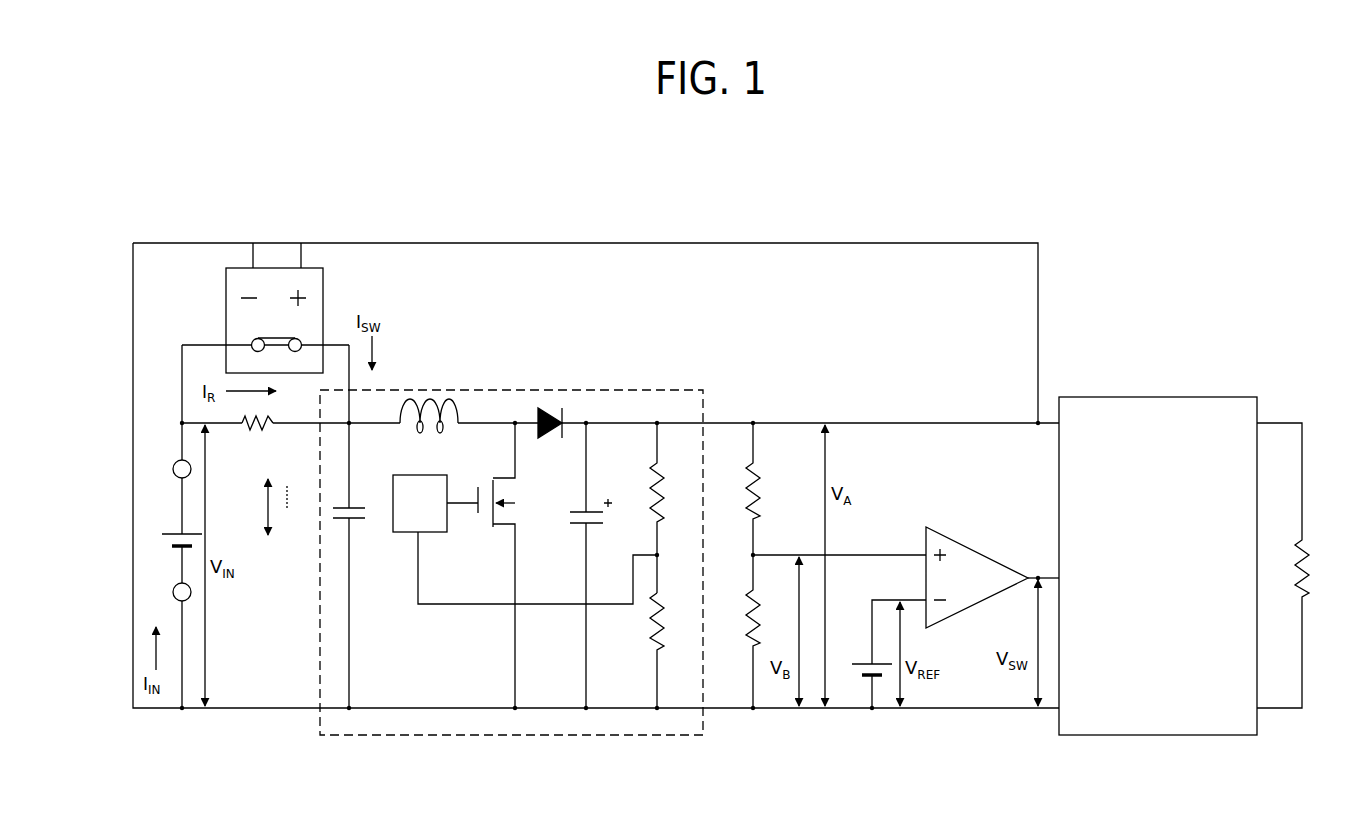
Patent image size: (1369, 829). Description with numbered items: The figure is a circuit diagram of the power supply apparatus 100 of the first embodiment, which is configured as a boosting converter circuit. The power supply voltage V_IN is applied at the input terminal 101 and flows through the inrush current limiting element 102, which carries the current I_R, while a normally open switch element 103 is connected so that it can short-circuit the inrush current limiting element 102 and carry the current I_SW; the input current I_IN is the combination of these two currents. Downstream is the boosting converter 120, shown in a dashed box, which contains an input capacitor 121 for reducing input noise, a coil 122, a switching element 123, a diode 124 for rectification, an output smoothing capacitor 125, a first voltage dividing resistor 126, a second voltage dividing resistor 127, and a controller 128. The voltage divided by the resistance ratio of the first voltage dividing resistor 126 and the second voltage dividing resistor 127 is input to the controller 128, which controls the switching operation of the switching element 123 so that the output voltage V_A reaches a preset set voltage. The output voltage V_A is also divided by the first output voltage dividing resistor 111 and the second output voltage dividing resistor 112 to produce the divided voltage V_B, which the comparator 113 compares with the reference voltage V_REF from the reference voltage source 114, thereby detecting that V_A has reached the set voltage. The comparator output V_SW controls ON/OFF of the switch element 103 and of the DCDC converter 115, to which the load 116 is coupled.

The power supply apparatus 100 is at (1101, 301).
The input terminal 101 is at (172, 469).
The inrush current limiting element 102 is at (252, 434).
The switch element 103 is at (260, 266).
The first output voltage dividing resistor 111 is at (752, 515).
The second output voltage dividing resistor 112 is at (752, 637).
The comparator 113 is at (949, 537).
The reference voltage source 114 is at (870, 660).
The DCDC converter 115 is at (1107, 720).
The load 116 is at (1310, 550).
The boosting converter 120 is at (668, 388).
The input capacitor 121 is at (357, 524).
The coil 122 is at (412, 432).
The switching element 123 is at (493, 475).
The diode 124 is at (545, 442).
The output smoothing capacitor 125 is at (582, 532).
The first voltage dividing resistor 126 is at (650, 470).
The second voltage dividing resistor 127 is at (657, 640).
The controller 128 is at (408, 532).